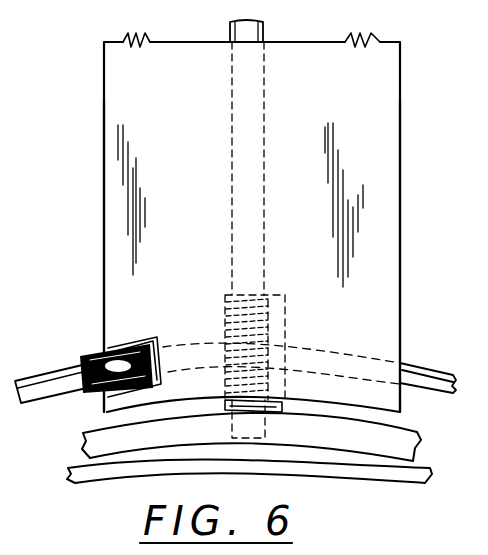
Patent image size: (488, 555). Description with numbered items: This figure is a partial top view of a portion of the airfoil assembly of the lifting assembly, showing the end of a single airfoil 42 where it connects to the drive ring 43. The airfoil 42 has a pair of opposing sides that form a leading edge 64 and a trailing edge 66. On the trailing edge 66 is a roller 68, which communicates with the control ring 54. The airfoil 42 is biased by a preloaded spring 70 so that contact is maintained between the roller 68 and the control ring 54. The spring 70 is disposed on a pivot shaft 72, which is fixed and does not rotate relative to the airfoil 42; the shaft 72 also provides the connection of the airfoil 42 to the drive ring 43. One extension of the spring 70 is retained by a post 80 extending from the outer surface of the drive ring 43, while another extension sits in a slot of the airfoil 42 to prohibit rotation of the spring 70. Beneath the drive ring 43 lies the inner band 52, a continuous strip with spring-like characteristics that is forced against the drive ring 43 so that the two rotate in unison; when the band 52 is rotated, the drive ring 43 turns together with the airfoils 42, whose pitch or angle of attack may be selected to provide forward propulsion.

The airfoil 42 is at (398, 80).
The drive ring 43 is at (408, 433).
The inner band 52 is at (376, 466).
The control ring 54 is at (42, 396).
The leading edge 64 is at (400, 266).
The trailing edge 66 is at (103, 226).
The roller 68 is at (85, 362).
The preloaded spring 70 is at (230, 294).
The pivot shaft 72 is at (265, 72).
The post 80 is at (272, 410).